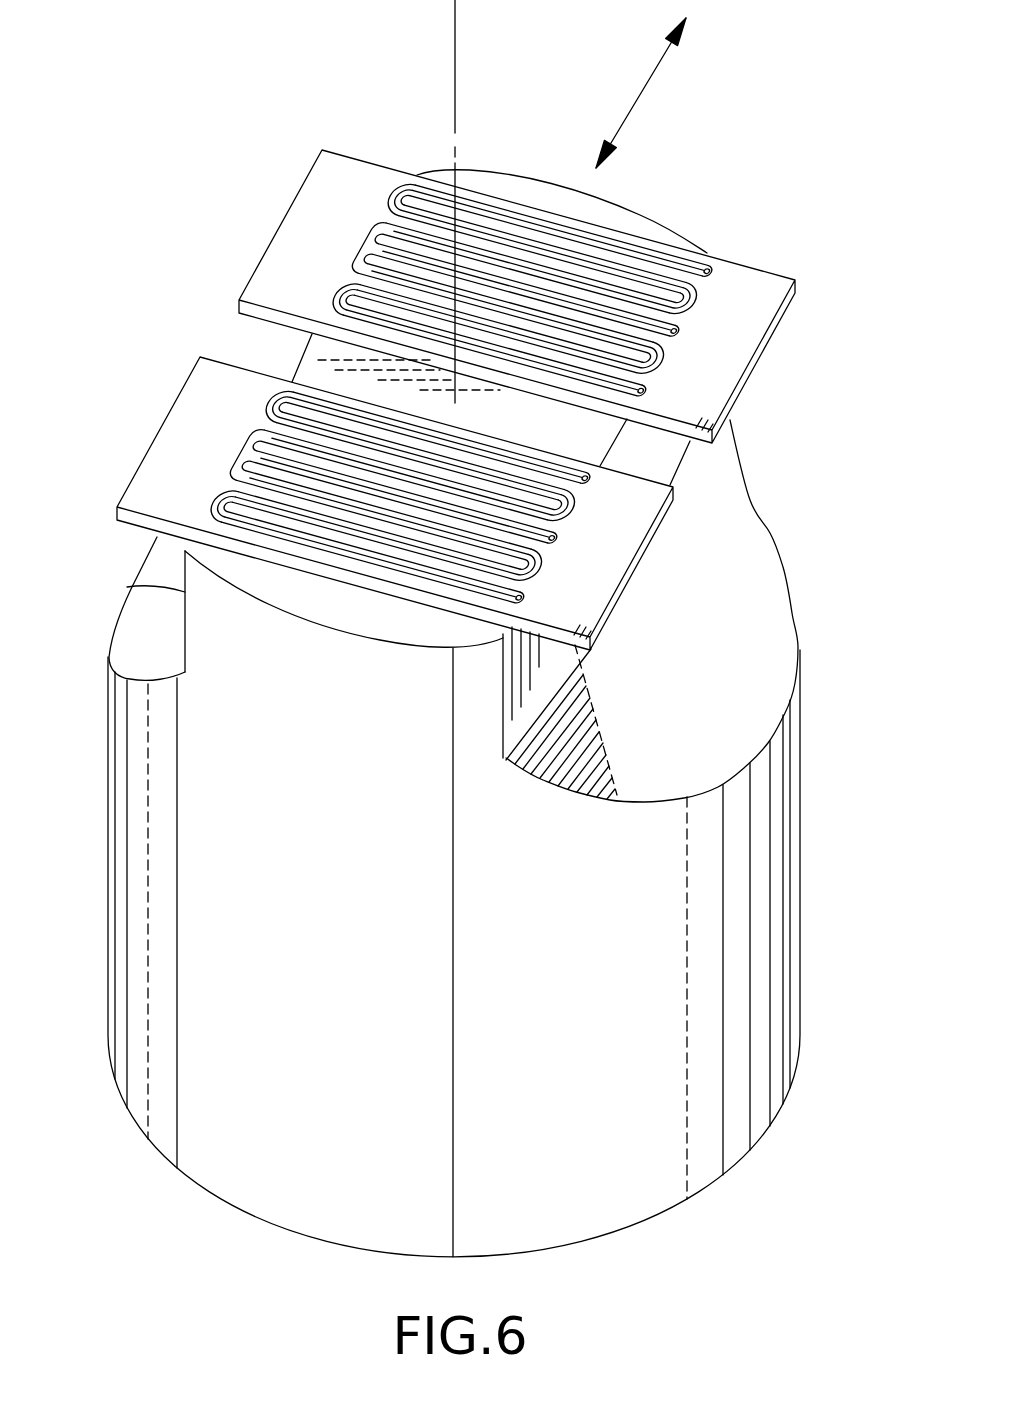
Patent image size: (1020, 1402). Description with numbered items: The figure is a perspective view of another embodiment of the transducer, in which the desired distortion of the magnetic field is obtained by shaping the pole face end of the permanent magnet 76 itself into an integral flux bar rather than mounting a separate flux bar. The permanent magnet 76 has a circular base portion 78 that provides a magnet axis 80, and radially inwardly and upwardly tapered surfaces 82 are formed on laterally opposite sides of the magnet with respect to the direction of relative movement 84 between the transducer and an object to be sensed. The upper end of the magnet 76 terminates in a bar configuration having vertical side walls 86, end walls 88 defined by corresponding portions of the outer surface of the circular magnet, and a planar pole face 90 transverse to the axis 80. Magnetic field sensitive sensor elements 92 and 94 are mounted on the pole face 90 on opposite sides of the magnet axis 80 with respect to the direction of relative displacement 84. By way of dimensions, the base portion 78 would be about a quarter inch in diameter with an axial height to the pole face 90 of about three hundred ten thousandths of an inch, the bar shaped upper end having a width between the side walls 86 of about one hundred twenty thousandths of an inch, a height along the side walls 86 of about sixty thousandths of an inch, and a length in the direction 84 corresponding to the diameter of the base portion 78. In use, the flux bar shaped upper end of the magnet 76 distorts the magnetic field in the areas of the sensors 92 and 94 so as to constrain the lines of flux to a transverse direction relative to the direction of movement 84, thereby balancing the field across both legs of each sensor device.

The permanent magnet 76 is at (782, 487).
The circular base portion 78 is at (780, 940).
The magnet axis 80 is at (454, 62).
The tapered surfaces 82 is at (137, 634).
The direction of relative movement 84 is at (636, 93).
The vertical side walls 86 is at (128, 580).
The end walls 88 is at (643, 212).
The planar pole face 90 is at (305, 358).
The magnetic field sensitive sensor element 92 is at (160, 424).
The magnetic field sensitive sensor element 94 is at (770, 330).